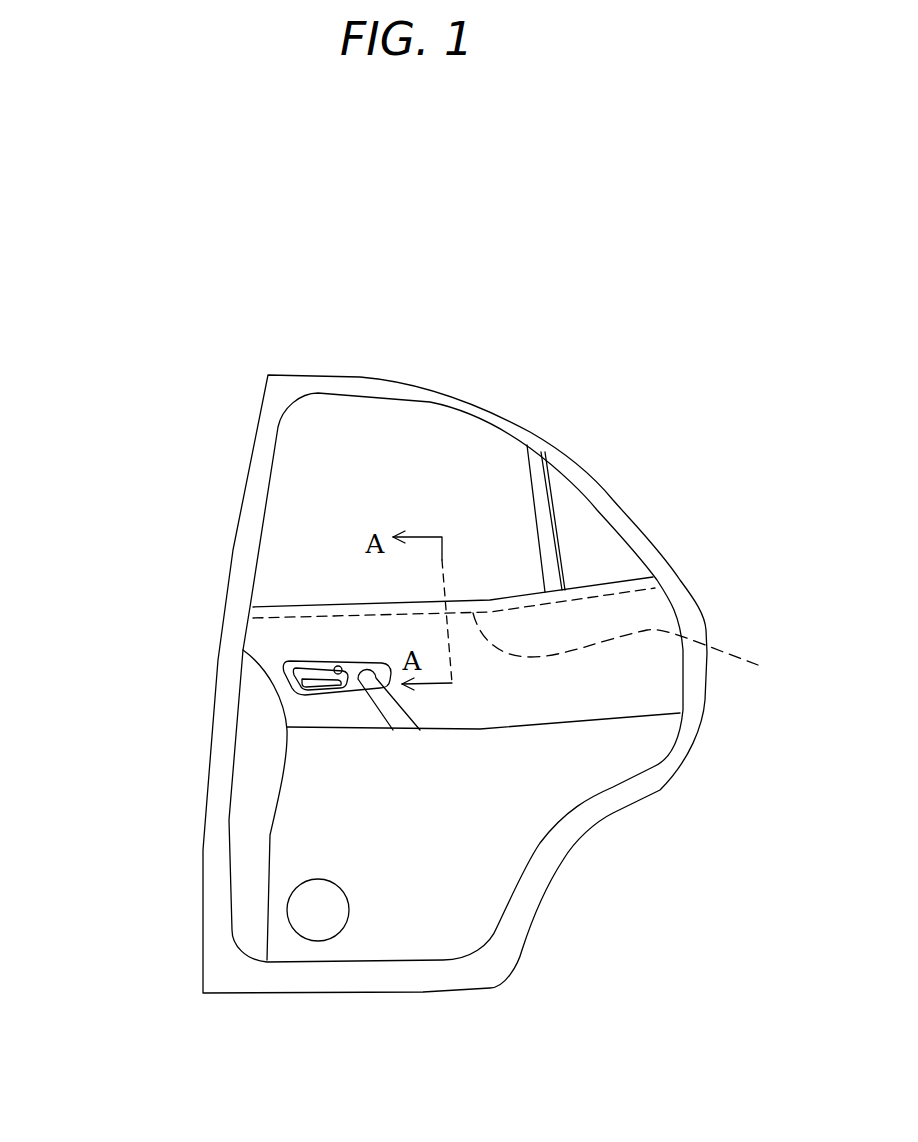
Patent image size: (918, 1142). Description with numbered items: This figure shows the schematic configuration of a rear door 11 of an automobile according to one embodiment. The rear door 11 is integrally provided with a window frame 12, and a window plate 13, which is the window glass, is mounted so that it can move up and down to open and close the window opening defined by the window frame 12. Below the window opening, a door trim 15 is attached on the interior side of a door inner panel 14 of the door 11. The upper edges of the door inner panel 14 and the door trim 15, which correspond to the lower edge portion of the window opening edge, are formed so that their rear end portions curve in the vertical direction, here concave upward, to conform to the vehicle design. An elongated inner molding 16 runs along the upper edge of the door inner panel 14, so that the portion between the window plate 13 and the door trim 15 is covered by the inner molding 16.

The rear door 11 is at (216, 647).
The window frame 12 is at (410, 378).
The window plate 13 is at (458, 463).
The door inner panel 14 is at (222, 747).
The door trim 15 is at (300, 797).
The inner molding 16 is at (636, 655).